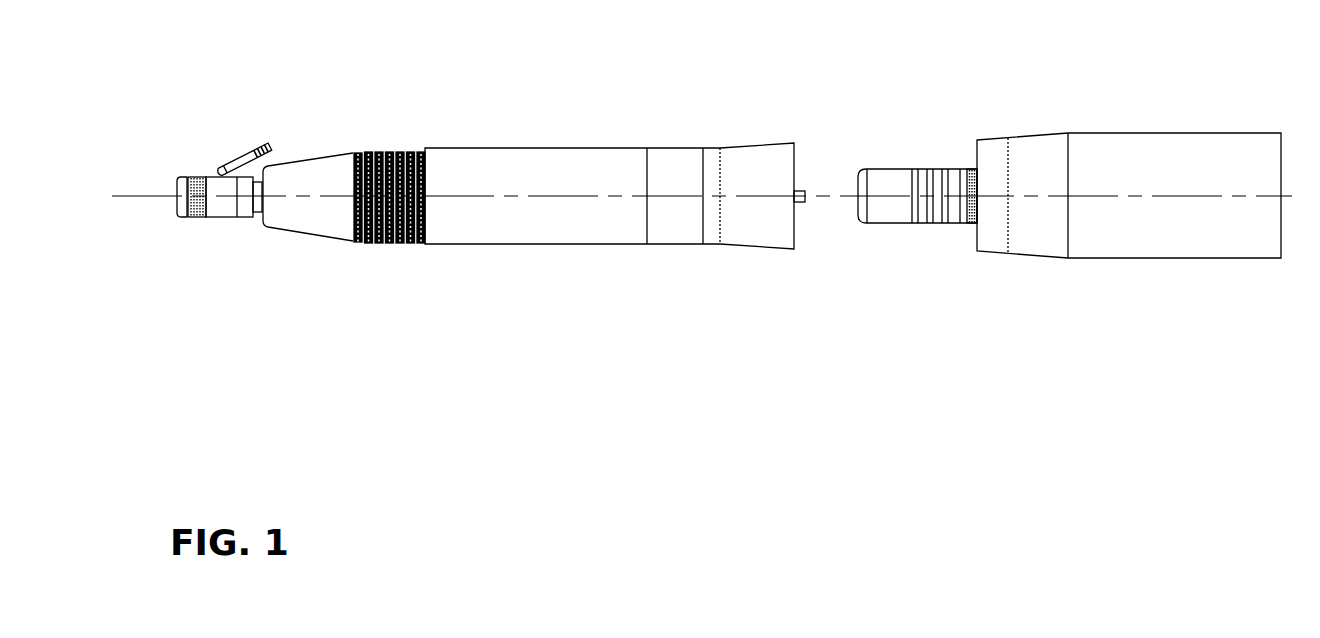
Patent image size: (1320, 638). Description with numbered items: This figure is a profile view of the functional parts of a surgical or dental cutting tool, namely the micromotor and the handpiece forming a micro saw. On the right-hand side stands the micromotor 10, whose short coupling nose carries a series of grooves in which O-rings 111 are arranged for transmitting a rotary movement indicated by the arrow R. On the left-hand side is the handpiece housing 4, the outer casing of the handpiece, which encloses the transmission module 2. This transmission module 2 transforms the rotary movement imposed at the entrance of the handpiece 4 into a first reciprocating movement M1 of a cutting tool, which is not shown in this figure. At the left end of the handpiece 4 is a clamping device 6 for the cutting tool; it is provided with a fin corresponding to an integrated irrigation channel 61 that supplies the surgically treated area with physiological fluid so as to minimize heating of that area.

The transmission module 2 is at (803, 241).
The handpiece housing 4 is at (548, 136).
The clamping device 6 is at (199, 160).
The integrated irrigation channel 61 is at (259, 152).
The micromotor 10 is at (1174, 124).
The O-rings 111 is at (947, 168).
The rotary movement R is at (846, 222).
The first reciprocating movement M1 is at (242, 247).